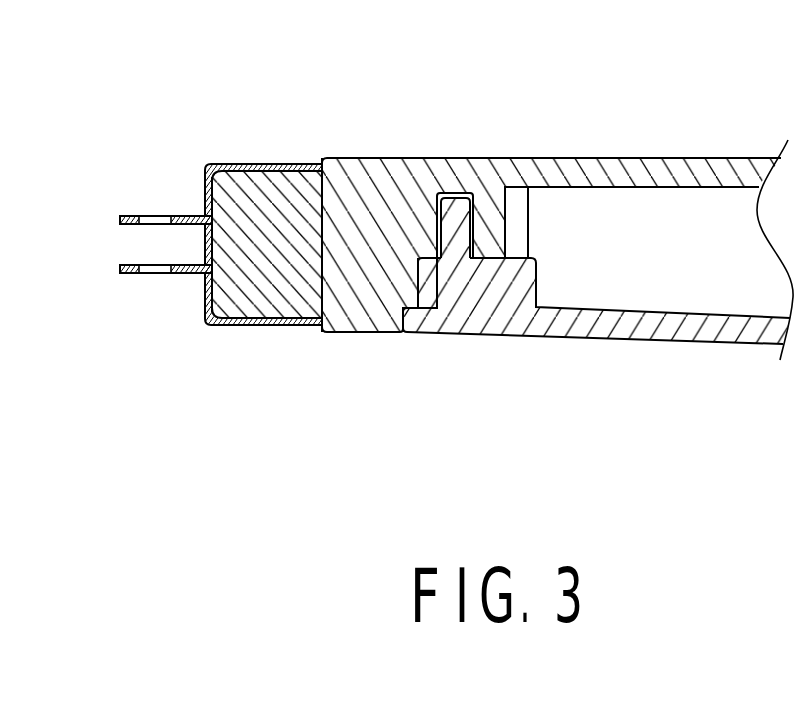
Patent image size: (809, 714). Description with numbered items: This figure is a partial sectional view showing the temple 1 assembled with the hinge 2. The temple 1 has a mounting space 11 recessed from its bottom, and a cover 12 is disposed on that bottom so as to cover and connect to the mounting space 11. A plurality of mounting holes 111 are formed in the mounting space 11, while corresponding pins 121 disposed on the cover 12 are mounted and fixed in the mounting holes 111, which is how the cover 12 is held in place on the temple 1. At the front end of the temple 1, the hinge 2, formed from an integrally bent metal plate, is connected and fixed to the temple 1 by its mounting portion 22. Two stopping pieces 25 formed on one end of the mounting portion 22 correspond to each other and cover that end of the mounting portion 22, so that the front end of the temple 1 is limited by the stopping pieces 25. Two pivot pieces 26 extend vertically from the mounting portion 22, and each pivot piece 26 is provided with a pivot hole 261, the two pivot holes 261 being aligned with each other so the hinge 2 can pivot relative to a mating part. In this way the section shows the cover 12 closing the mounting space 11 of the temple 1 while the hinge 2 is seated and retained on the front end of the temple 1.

The temple 1 is at (519, 158).
The mounting space 11 is at (625, 212).
The mounting hole 111 is at (427, 197).
The cover 12 is at (660, 323).
The pin 121 is at (455, 233).
The hinge 2 is at (245, 130).
The mounting portion 22 is at (290, 163).
The stopping piece 25 is at (204, 187).
The pivot piece 26 is at (128, 217).
The pivot hole 261 is at (155, 217).